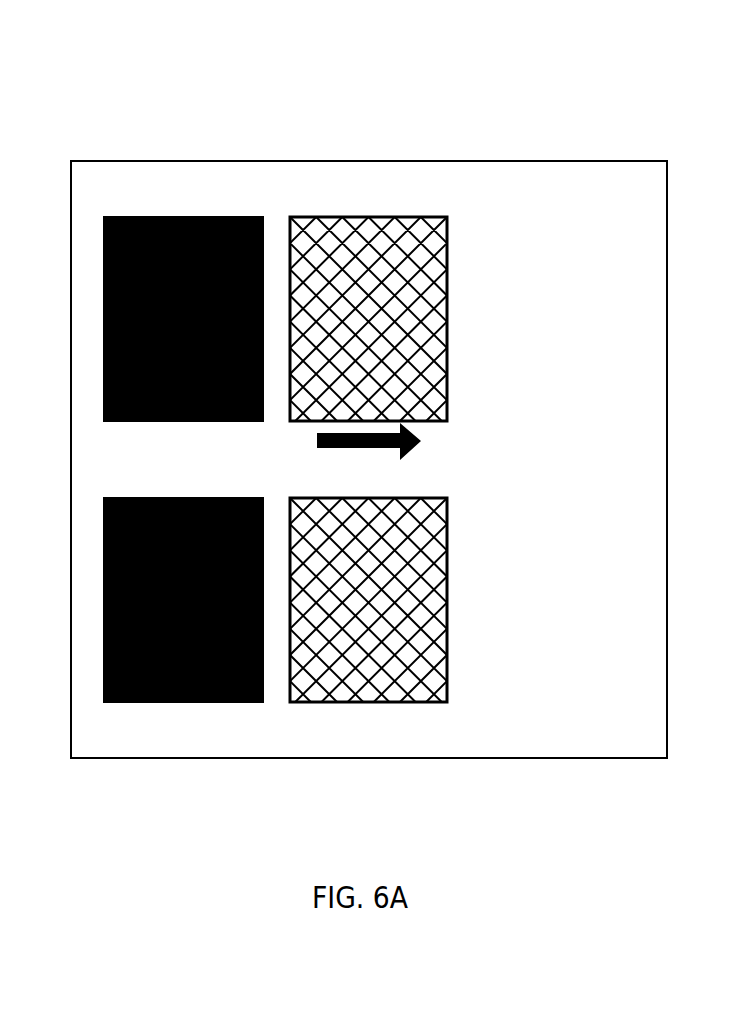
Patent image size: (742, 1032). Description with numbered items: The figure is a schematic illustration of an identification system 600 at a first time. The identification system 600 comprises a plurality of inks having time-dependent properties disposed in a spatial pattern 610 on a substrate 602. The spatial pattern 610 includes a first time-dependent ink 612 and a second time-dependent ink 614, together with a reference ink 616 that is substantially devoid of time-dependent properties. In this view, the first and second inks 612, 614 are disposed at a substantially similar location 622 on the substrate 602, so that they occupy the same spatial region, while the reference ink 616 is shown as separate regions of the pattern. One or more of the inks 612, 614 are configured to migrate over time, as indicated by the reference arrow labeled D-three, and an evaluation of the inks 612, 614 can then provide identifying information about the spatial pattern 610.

The identification system 600 is at (531, 118).
The substrate 602 is at (205, 737).
The spatial pattern 610 is at (457, 735).
The first time-dependent ink 612 is at (330, 217).
The second time-dependent ink 614 is at (397, 217).
The reference ink 616 is at (153, 217).
The substantially similar location 622 is at (434, 195).